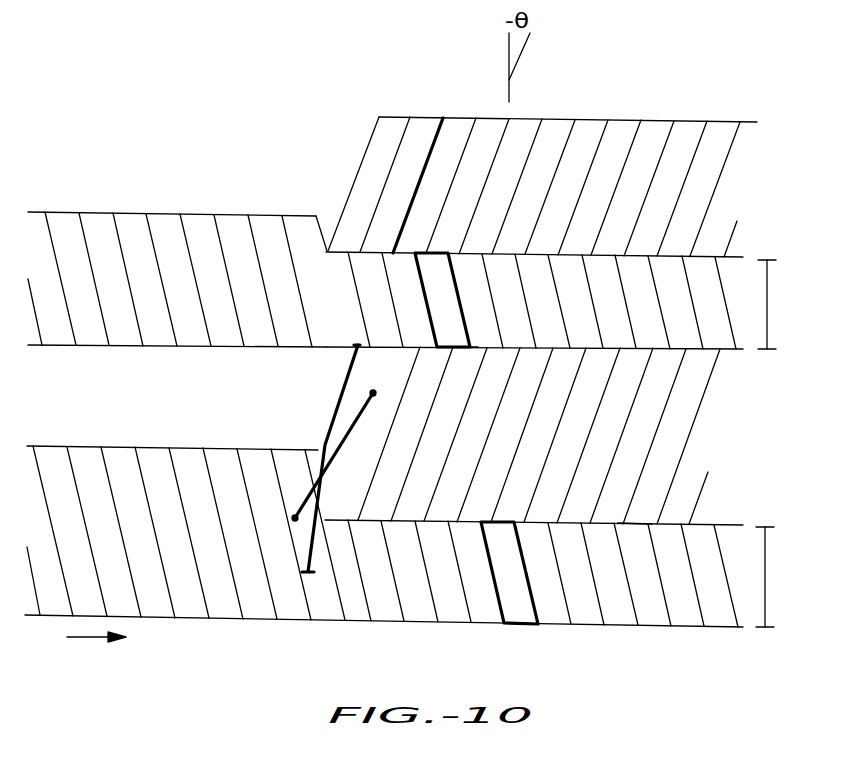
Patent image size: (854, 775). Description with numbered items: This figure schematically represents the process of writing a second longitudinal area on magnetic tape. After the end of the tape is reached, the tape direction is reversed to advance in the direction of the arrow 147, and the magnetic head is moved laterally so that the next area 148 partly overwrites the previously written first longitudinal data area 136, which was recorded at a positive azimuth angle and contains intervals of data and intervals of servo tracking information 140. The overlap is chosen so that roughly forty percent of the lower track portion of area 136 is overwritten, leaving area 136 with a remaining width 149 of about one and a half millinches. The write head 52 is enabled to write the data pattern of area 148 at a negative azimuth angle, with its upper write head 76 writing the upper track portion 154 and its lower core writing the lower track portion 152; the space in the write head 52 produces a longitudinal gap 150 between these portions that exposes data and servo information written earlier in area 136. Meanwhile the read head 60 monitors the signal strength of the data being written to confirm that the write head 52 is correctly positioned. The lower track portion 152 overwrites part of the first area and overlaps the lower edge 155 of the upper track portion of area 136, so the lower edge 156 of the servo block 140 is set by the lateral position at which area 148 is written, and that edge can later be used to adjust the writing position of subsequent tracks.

The upper write head 76 is at (417, 185).
The upper track portion 154 is at (745, 197).
The longitudinal gap 150 is at (770, 305).
The servo tracking information 140 is at (447, 303).
The lower edge of servo information 156 is at (462, 347).
The lower edge of upper track portion 155 is at (190, 346).
The write head 52 is at (347, 373).
The read head 60 is at (346, 466).
The lower track portion 152 is at (722, 456).
The second longitudinal area 148 is at (632, 528).
The area width 149 is at (768, 577).
The first longitudinal data area 136 is at (558, 614).
The direction of tape travel 147 is at (96, 654).